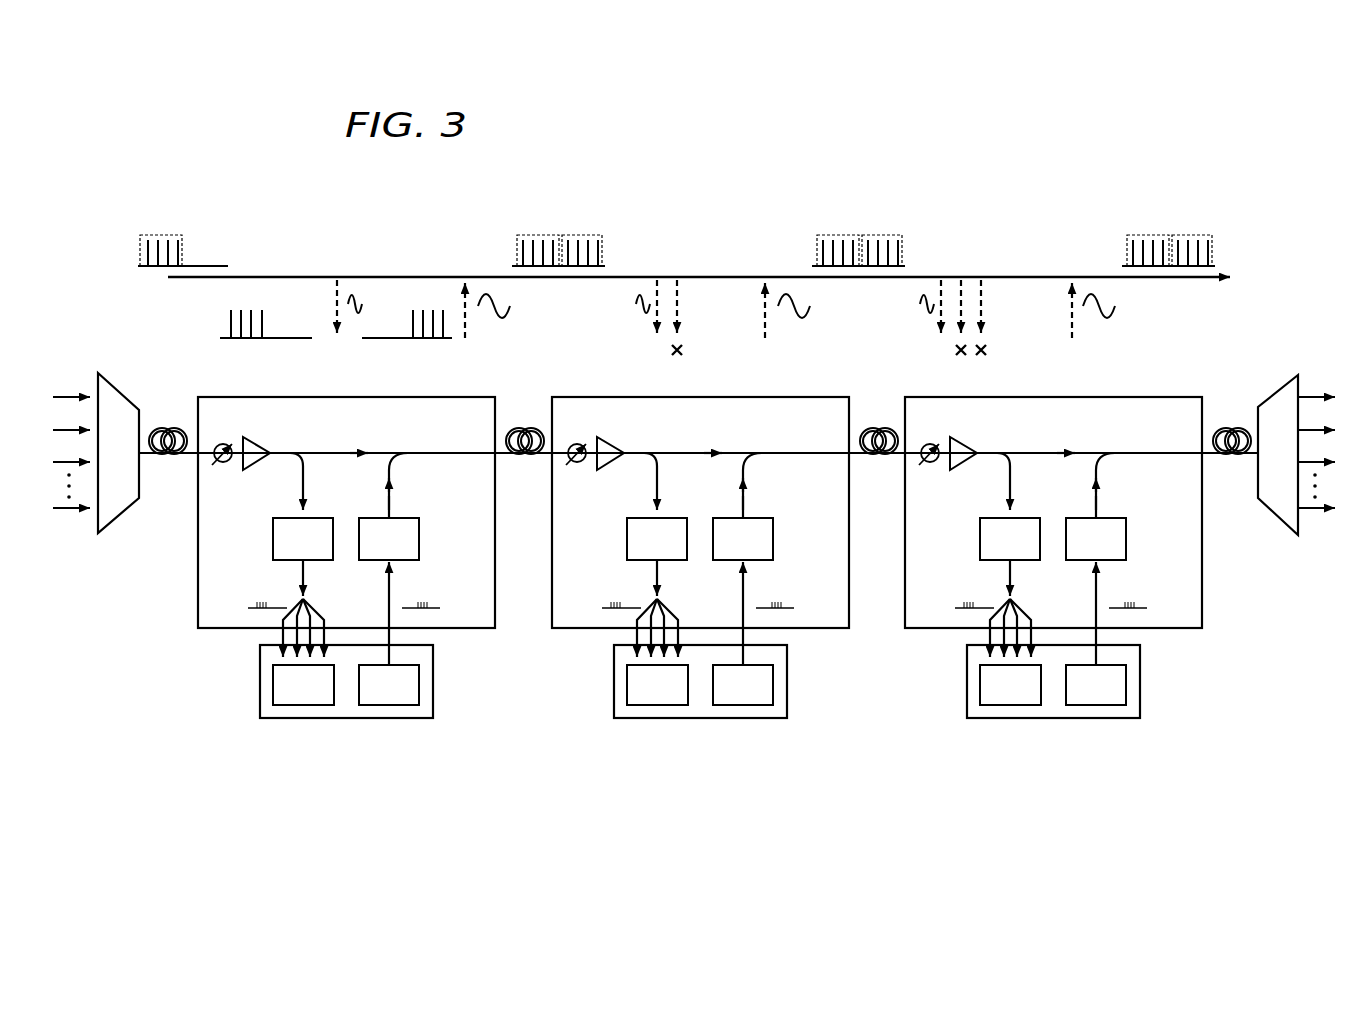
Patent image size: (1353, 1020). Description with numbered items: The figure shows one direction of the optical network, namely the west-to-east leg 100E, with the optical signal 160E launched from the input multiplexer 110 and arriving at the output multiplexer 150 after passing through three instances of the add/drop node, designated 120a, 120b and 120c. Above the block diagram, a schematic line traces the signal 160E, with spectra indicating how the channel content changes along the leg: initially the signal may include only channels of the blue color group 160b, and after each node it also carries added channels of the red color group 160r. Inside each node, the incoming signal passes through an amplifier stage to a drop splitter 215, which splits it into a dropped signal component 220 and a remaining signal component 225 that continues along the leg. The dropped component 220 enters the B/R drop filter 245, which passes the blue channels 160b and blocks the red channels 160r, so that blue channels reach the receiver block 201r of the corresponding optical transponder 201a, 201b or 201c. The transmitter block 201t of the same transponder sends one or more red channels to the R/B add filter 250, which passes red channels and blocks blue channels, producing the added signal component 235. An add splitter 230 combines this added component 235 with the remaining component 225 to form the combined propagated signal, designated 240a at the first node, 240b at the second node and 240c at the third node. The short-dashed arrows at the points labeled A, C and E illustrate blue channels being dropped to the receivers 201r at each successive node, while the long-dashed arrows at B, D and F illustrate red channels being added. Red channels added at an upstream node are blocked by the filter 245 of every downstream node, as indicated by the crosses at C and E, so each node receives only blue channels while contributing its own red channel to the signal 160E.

The optical communication system / fiber link 100E is at (1277, 183).
The input multiplexer 110 is at (118, 520).
The first add/drop node 120a is at (379, 397).
The second add/drop node 120b is at (733, 397).
The third add/drop node 120c is at (1087, 397).
The output multiplexer 150 is at (1276, 520).
The optical signal 160E is at (277, 275).
The blue channels 160b is at (159, 233).
The red channels 160r is at (583, 233).
The optical transponder of first node 201a is at (260, 682).
The optical transponder of second node 201b is at (614, 682).
The optical transponder of third node 201c is at (967, 682).
The receiver block 201r is at (657, 632).
The transmitter block 201t is at (742, 633).
The drop splitter 215 is at (257, 445).
The dropped signal component 220 is at (300, 495).
The remaining signal component 225 is at (352, 447).
The add splitter 230 is at (414, 452).
The added signal component 235 is at (391, 503).
The combined propagated signal of first node 240a is at (525, 427).
The combined propagated signal of second node 240b is at (879, 427).
The combined propagated signal of third node 240c is at (1232, 427).
The B/R drop filter 245 is at (273, 546).
The R/B add filter 250 is at (421, 549).